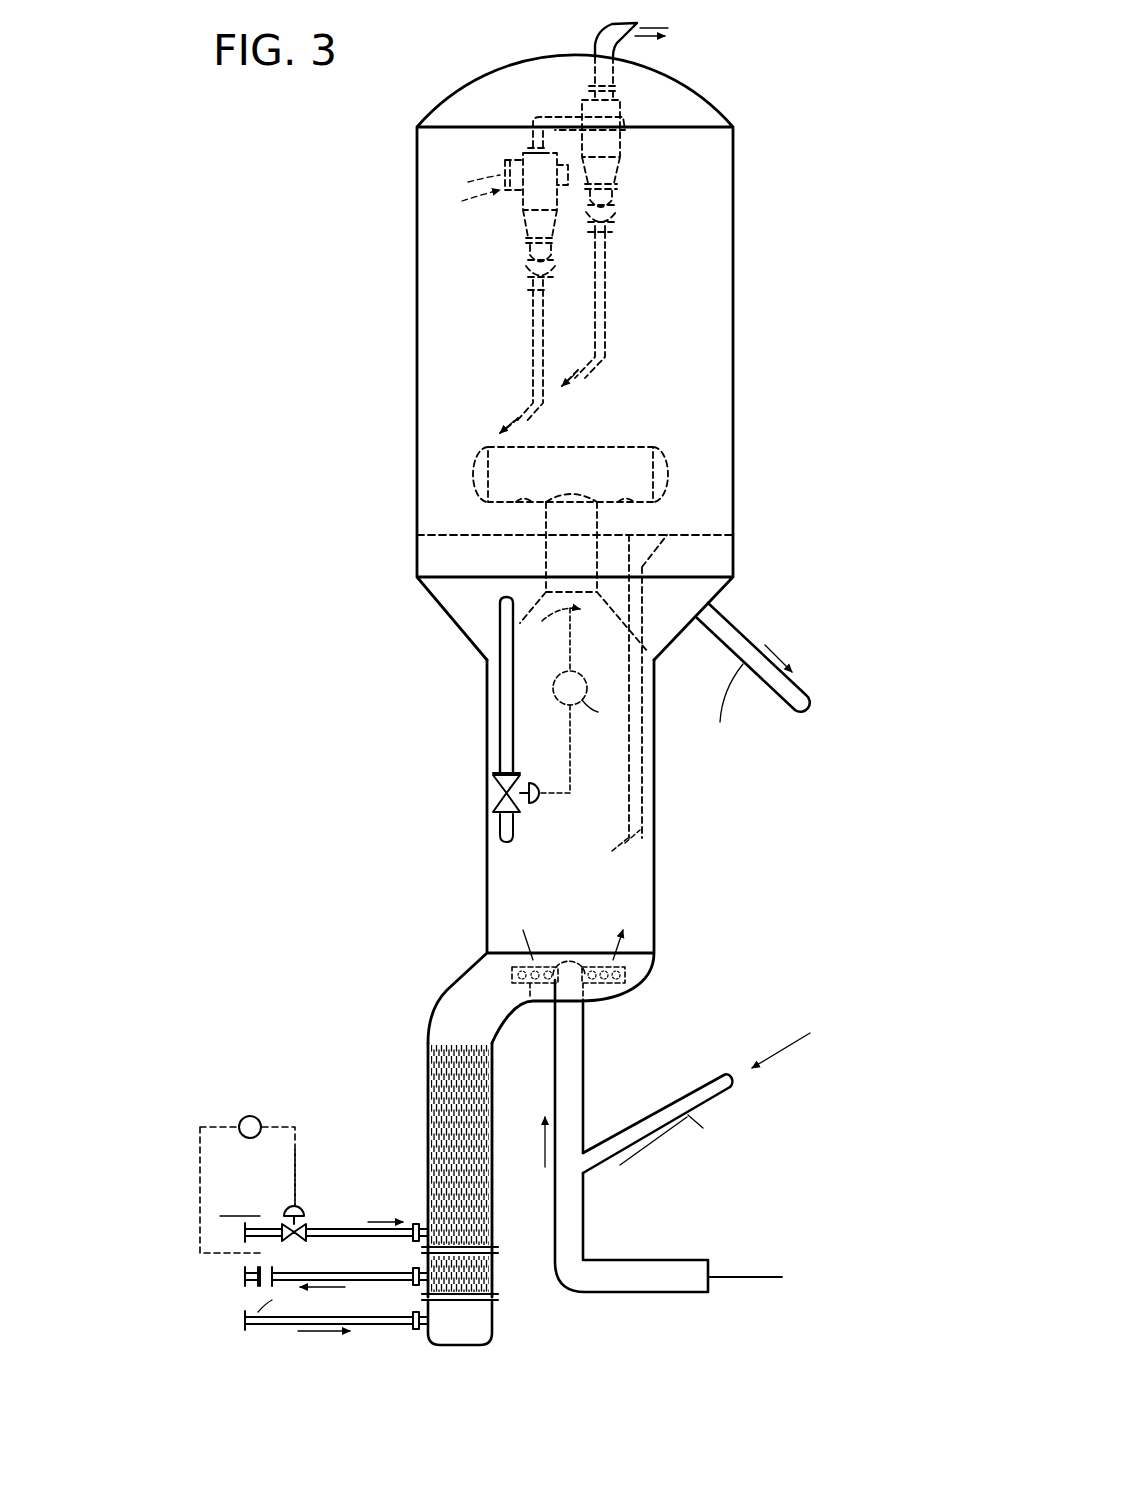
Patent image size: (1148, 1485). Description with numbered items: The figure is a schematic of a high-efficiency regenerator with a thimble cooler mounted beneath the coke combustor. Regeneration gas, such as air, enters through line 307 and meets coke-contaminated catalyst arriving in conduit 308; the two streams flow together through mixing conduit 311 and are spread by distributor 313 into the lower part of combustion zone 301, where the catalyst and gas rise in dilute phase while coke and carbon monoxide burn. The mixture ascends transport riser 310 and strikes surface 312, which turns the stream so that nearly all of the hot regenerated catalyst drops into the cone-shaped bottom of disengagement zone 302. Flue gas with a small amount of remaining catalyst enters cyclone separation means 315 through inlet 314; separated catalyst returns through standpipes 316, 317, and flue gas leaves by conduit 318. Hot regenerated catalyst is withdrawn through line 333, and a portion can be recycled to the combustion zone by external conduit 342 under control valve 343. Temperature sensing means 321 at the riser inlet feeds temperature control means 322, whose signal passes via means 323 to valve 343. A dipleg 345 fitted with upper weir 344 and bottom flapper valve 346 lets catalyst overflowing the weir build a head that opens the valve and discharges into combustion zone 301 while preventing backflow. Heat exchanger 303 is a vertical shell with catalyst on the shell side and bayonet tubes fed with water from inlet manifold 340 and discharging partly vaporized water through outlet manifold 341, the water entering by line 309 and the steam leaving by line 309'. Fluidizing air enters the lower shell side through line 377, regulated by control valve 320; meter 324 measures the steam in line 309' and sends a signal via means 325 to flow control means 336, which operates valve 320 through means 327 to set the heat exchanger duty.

The combustion zone 301 is at (655, 893).
The disengagement zone 302 is at (733, 222).
The heat exchanger 303 is at (428, 1103).
The line 307 is at (742, 1277).
The conduit 308 is at (668, 1105).
The line 309 is at (336, 1308).
The line 309' is at (336, 1263).
The transport riser 310 is at (546, 518).
The mixing conduit 311 is at (583, 1062).
The surface 312 is at (595, 447).
The distributor 313 is at (617, 985).
The inlet 314 is at (505, 167).
The cyclone separation means 315 is at (620, 103).
The standpipe 316 is at (533, 342).
The standpipe 317 is at (606, 280).
The conduit 318 is at (598, 24).
The control valve 320 is at (305, 1222).
The temperature sensing means 321 is at (550, 639).
The temperature control means 322 is at (570, 704).
The signal transmitting means 323 is at (570, 757).
The meter 324 is at (262, 1285).
The signal transmitting means 325 is at (200, 1168).
The signal transmitting means 327 is at (295, 1150).
The line 333 is at (733, 623).
The flow control means 336 is at (250, 1114).
The inlet manifold 340 is at (472, 1347).
The outlet manifold 341 is at (492, 1276).
The external conduit 342 is at (500, 693).
The control valve 343 is at (500, 789).
The upper weir 344 is at (650, 534).
The dipleg 345 is at (647, 607).
The flapper valve 346 is at (622, 848).
The line 377 is at (362, 1225).